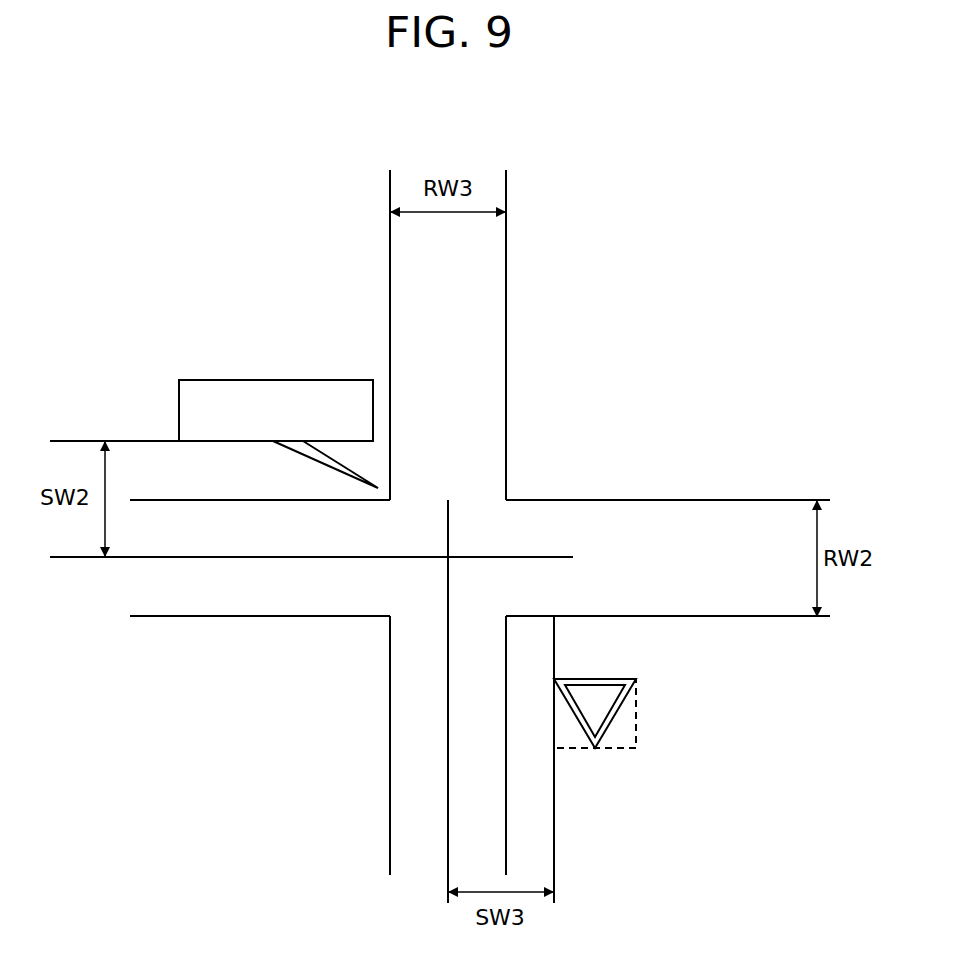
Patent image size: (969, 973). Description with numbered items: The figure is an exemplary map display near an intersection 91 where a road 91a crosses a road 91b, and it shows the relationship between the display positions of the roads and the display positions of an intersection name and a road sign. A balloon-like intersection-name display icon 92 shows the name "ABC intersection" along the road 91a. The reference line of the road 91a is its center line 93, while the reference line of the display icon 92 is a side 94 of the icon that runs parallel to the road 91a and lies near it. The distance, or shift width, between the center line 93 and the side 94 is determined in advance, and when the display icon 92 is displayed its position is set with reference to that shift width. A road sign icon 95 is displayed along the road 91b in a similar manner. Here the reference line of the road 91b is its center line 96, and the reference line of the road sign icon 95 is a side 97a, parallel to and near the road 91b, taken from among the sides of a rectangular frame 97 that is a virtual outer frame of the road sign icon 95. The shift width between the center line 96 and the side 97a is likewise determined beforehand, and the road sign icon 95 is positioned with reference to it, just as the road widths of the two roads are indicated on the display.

The intersection 91 is at (480, 522).
The road 91a is at (717, 528).
The road 91b is at (485, 266).
The intersection-name display icon 92 is at (243, 380).
The center line 93 is at (278, 558).
The side 94 is at (244, 447).
The road sign icon 95 is at (613, 680).
The center line 96 is at (448, 768).
The rectangular frame 97 is at (625, 752).
The side 97a is at (558, 728).